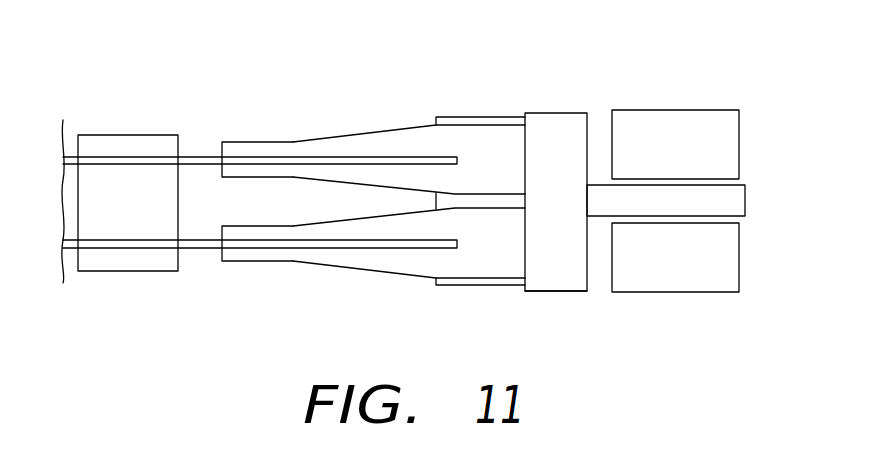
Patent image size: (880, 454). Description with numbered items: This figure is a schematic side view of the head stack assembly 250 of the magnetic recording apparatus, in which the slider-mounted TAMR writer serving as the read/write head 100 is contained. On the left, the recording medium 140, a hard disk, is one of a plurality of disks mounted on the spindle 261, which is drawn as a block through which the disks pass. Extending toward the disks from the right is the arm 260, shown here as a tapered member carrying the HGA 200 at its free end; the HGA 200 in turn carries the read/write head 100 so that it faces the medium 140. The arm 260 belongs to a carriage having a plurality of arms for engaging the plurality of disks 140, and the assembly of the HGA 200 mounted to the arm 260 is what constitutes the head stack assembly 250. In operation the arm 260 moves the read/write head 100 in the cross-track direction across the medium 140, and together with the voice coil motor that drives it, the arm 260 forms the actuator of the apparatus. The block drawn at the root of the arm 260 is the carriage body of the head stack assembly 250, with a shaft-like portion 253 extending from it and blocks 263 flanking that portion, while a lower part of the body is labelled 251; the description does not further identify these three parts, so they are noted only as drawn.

The read/write head 100 is at (222, 146).
The medium 140 is at (193, 157).
The HGA 200 is at (312, 147).
The head stack assembly 250 is at (563, 88).
The connector body bottom portion 251 is at (557, 278).
The connector rod 253 is at (733, 200).
The arm 260 is at (445, 117).
The spindle 261 is at (117, 148).
The terminal blocks 263 is at (675, 125).